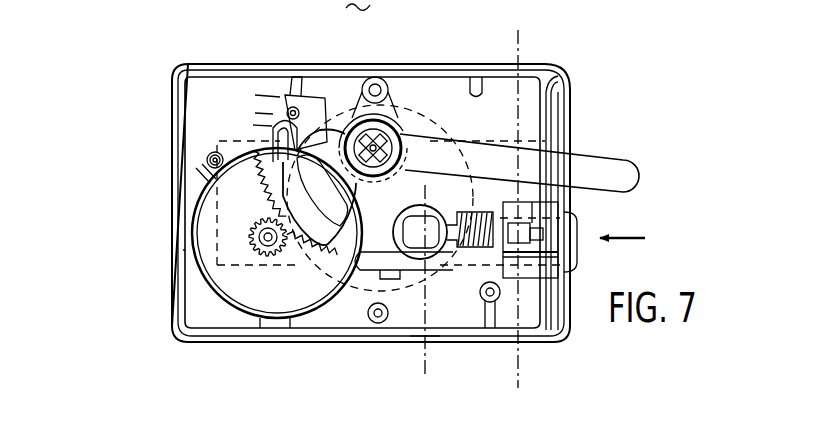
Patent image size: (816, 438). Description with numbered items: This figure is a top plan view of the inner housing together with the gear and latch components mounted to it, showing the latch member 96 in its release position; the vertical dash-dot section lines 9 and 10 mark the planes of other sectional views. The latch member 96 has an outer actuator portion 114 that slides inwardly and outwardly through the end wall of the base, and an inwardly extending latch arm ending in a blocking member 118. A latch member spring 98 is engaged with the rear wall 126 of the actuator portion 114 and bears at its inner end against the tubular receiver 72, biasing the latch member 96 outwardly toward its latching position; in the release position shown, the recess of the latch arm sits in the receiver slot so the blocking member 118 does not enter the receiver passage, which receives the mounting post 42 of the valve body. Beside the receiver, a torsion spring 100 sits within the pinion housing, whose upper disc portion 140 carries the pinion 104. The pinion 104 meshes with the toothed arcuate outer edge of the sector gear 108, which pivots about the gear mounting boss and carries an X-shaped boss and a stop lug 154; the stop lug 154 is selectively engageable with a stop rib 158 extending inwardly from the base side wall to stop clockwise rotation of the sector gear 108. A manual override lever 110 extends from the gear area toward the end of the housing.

The section line 9- 9 is at (518, 30).
The section line 10- 10 is at (428, 187).
The mounting post 42 is at (332, 242).
The tubular receiver 72 is at (391, 233).
The latch member 96 is at (588, 254).
The latch member spring 98 is at (423, 342).
The torsion spring 100 is at (183, 251).
The pinion 104 is at (250, 248).
The sector gear 108 is at (257, 188).
The manual override lever 110 is at (510, 138).
The outer actuator portion 114 is at (582, 230).
The blocking member 118 is at (362, 271).
The rear wall 126 is at (397, 313).
The upper disc portion 140 is at (237, 280).
The stop lug 154 is at (272, 125).
The stop rib 158 is at (292, 90).